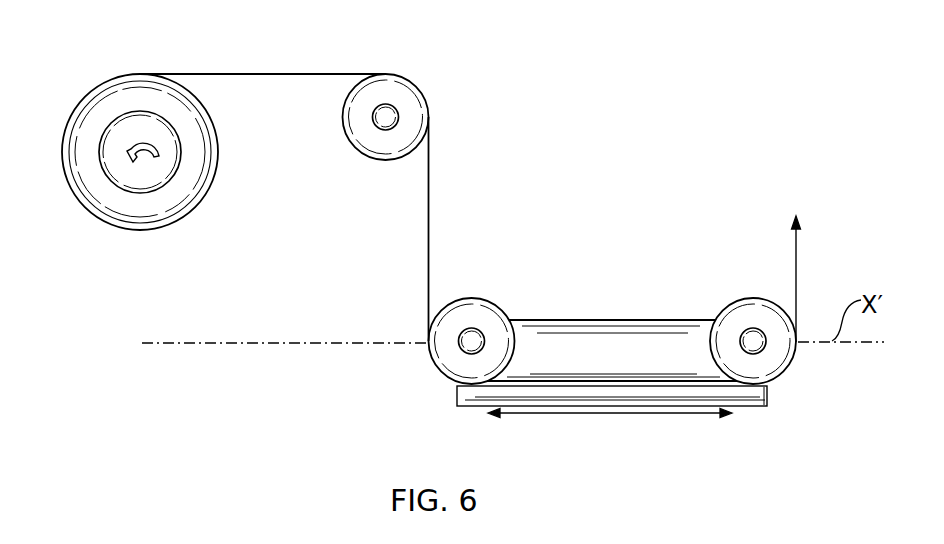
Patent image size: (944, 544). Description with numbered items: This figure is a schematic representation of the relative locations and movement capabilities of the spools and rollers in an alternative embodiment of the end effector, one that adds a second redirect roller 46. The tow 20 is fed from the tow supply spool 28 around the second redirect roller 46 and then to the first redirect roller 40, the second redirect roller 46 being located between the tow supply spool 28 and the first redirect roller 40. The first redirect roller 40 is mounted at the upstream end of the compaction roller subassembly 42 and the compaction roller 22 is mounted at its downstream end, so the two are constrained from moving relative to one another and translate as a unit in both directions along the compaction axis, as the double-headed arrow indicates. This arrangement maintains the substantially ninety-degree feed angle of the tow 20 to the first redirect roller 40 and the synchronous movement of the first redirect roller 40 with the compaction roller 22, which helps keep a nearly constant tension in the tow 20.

The tow 20 is at (288, 74).
The compaction roller 22 is at (773, 358).
The tow supply spool 28 is at (96, 128).
The first redirect roller 40 is at (447, 357).
The compaction roller subassembly 42 is at (631, 368).
The second redirect roller 46 is at (368, 130).